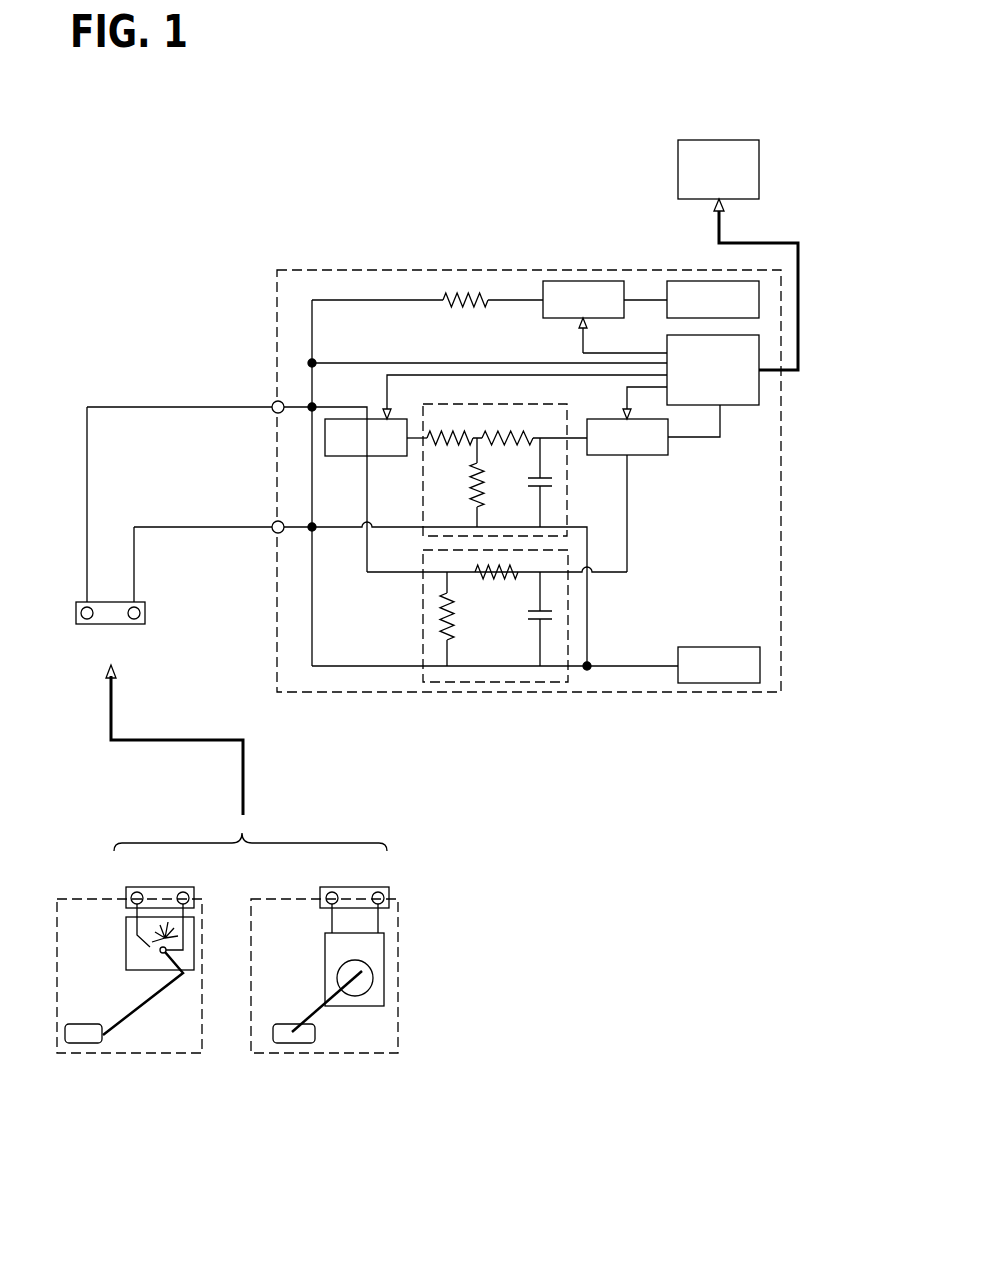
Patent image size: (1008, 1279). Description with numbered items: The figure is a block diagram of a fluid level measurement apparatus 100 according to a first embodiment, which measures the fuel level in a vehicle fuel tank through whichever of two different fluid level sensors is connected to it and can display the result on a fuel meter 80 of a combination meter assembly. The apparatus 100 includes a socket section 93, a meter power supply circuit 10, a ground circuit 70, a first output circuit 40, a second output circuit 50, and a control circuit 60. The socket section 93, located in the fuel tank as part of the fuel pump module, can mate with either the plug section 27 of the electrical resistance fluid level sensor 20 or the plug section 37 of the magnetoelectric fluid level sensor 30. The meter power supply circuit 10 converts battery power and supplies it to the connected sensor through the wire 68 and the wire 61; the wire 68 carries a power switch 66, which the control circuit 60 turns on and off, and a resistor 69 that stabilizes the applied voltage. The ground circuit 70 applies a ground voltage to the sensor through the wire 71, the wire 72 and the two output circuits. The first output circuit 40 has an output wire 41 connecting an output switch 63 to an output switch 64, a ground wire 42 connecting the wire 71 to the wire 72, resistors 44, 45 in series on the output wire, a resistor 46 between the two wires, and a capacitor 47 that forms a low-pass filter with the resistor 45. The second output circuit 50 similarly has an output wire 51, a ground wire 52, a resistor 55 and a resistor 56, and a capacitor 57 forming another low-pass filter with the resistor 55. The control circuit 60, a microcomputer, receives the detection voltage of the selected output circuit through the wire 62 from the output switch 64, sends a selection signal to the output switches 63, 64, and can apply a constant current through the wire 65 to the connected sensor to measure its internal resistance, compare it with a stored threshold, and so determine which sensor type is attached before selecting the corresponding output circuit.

The fluid level measurement apparatus 100 is at (192, 210).
The meter power supply circuit 10 is at (702, 279).
The fuel meter 80 is at (759, 170).
The control circuit 60 is at (759, 388).
The power switch 66 is at (583, 281).
The resistor 69 is at (447, 300).
The wire 68 is at (515, 300).
The wire 65 is at (374, 363).
The wire 61 is at (230, 407).
The output switch 63 is at (325, 438).
The wire 62 is at (720, 420).
The output switch 64 is at (668, 447).
The first output circuit 40 is at (618, 528).
The output wire 41 is at (516, 455).
The ground wire 42 is at (504, 583).
The resistor 44 is at (445, 440).
The resistor 45 is at (504, 440).
The resistor 46 is at (470, 500).
The capacitor 47 is at (536, 488).
The resistor 55 is at (500, 576).
The resistor 56 is at (440, 618).
The capacitor 57 is at (532, 623).
The second output circuit 50 is at (543, 682).
The output wire 51 is at (395, 572).
The ground wire 52 is at (388, 666).
The wire 71 is at (230, 527).
The wire 72 is at (630, 666).
The ground circuit 70 is at (760, 658).
The socket section 93 is at (145, 607).
The electrical resistance fluid level sensor 20 is at (145, 988).
The plug section 27 is at (168, 887).
The magnetoelectric fluid level sensor 30 is at (340, 988).
The plug section 37 is at (365, 887).